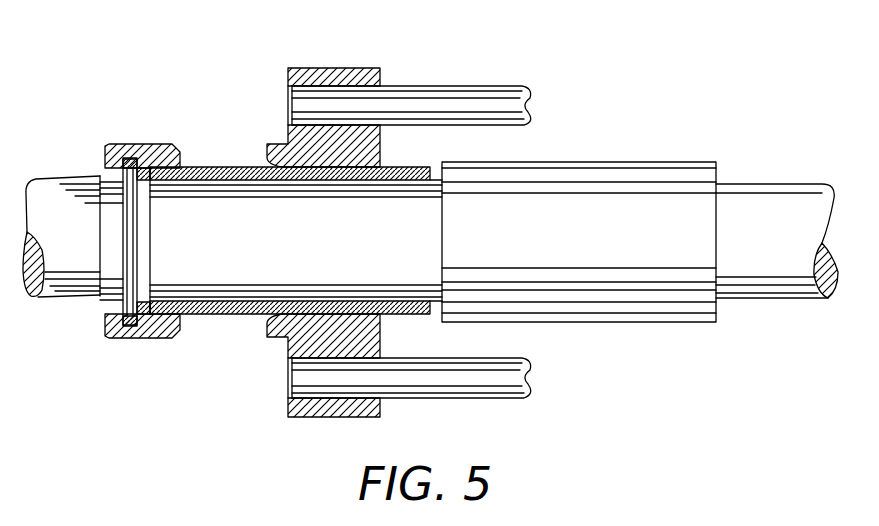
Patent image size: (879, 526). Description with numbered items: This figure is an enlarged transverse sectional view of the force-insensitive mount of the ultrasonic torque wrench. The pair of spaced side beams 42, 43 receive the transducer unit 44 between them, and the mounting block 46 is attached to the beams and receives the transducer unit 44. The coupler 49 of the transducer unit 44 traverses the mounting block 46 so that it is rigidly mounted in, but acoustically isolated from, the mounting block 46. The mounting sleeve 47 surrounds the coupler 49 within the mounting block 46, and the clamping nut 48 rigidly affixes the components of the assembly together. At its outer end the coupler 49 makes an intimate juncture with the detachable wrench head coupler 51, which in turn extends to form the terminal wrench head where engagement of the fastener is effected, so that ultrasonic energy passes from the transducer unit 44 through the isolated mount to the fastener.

The side beam 42 is at (515, 398).
The side beam 43 is at (503, 86).
The transducer unit 44 is at (663, 322).
The mounting block 46 is at (315, 68).
The mounting sleeve 47 is at (233, 167).
The clamping nut 48 is at (130, 145).
The coupler 49 is at (226, 301).
The detachable wrench head coupler 51 is at (62, 297).